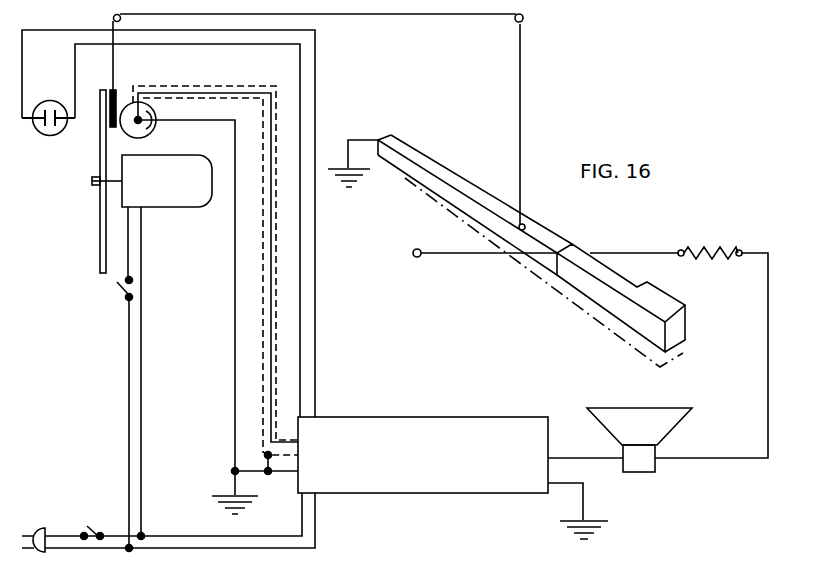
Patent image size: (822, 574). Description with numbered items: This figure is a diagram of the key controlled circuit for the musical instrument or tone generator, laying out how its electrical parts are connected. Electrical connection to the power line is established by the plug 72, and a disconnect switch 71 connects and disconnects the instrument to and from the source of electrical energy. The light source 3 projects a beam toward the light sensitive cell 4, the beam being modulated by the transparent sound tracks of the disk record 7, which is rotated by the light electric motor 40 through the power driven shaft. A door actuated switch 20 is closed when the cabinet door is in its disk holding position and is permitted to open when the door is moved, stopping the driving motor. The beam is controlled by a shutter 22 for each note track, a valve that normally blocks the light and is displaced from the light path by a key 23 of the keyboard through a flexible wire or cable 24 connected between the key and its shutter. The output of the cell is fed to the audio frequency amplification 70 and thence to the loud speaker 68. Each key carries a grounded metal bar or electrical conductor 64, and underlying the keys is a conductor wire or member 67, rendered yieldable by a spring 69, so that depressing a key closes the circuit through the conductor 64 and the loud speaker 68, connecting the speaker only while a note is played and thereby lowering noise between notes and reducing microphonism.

The light source 3 is at (48, 137).
The light sensitive cell 4 is at (152, 130).
The disk record 7 is at (98, 231).
The door actuated switch 20 is at (122, 291).
The shutter 22 is at (120, 88).
The key 23 is at (675, 307).
The flexible wire or cable 24 is at (524, 96).
The light electric motor 40 is at (170, 206).
The metal bar or electrical conductor 64 is at (455, 182).
The conductor wire or member 67 is at (490, 256).
The loud speaker 68 is at (652, 453).
The spring 69 is at (705, 248).
The audio frequency amplification 70 is at (440, 494).
The disconnect switch 71 is at (93, 525).
The plug 72 is at (38, 526).